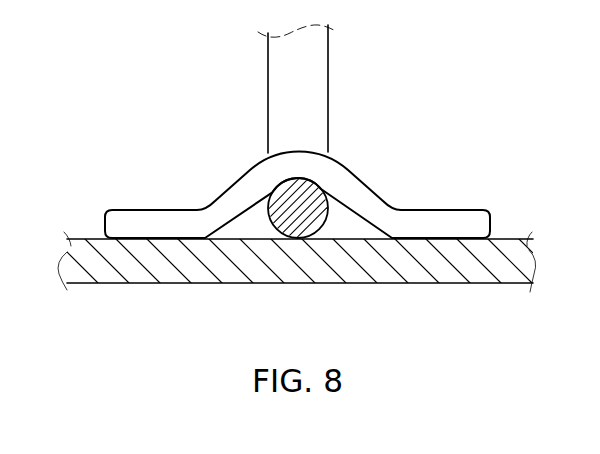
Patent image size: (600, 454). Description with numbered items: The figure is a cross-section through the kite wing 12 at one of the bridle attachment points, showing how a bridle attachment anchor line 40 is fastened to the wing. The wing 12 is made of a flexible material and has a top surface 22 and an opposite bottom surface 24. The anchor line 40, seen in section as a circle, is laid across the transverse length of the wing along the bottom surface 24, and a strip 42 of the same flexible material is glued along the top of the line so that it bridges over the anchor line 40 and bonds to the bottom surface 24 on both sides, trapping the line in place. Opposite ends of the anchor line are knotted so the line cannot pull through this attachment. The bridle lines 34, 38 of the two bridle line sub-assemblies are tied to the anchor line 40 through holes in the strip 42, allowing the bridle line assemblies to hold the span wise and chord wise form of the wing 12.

The wing 12 is at (308, 261).
The top surface 22 is at (82, 239).
The bottom surface 24 is at (487, 284).
The bridle lines 34 is at (357, 87).
The bridle lines 38 is at (318, 55).
The bridle attachment anchor line 40 is at (315, 204).
The strip 42 is at (465, 219).